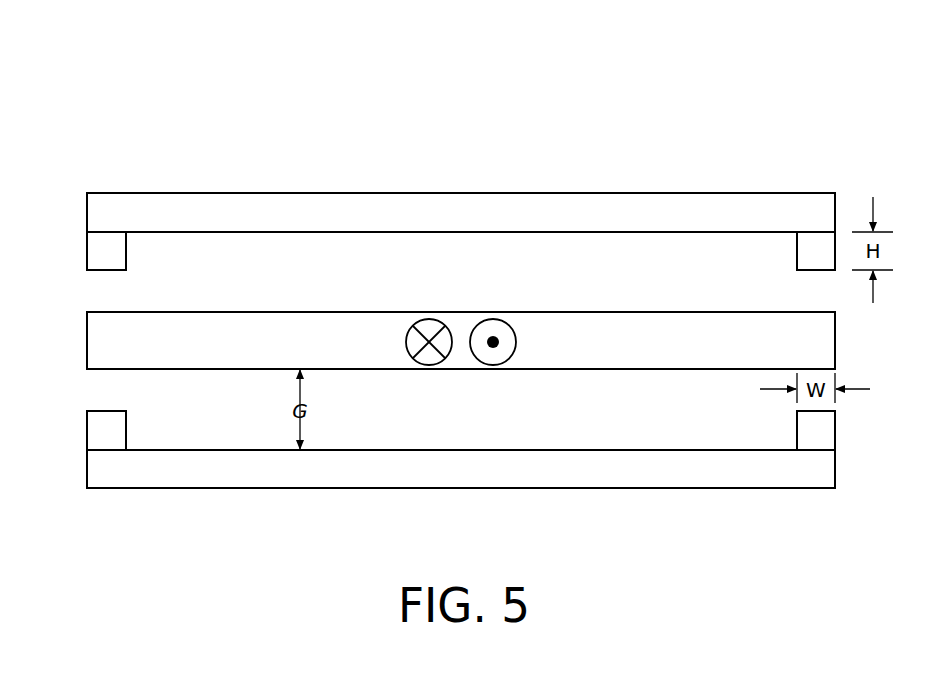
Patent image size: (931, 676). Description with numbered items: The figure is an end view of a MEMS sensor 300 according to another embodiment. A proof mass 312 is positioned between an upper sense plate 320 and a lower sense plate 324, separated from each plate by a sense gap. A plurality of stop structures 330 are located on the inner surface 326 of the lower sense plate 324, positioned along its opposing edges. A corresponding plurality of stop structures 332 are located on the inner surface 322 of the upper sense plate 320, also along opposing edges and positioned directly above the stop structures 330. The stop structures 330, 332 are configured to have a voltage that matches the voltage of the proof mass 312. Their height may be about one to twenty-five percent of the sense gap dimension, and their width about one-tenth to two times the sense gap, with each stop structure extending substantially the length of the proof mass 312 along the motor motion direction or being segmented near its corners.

The MEMS sensor 300 is at (603, 100).
The upper sense plate 320 is at (87, 218).
The inner surface 322 is at (427, 232).
The stop structures 332 is at (126, 248).
The proof mass 312 is at (87, 354).
The inner surface 326 is at (438, 450).
The stop structures 330 is at (126, 437).
The lower sense plate 324 is at (87, 472).